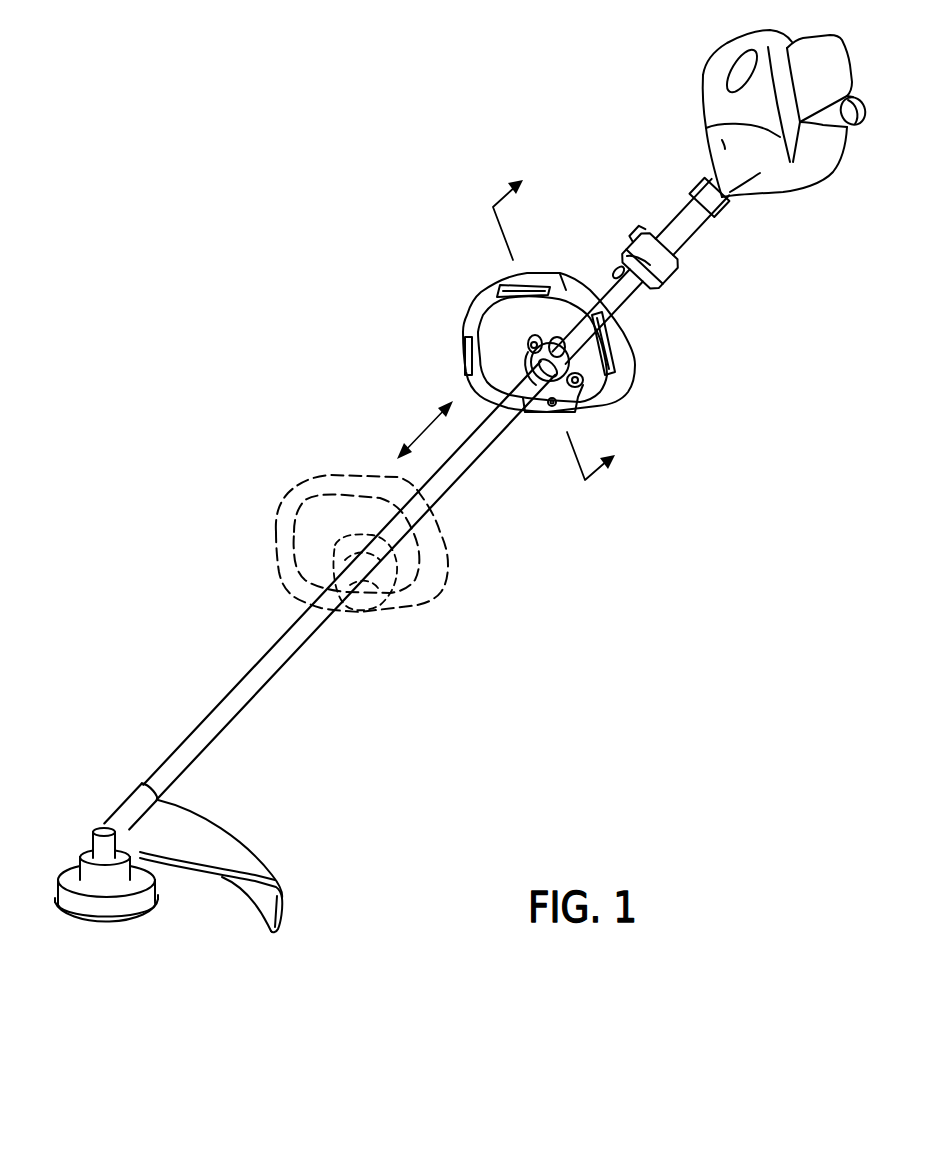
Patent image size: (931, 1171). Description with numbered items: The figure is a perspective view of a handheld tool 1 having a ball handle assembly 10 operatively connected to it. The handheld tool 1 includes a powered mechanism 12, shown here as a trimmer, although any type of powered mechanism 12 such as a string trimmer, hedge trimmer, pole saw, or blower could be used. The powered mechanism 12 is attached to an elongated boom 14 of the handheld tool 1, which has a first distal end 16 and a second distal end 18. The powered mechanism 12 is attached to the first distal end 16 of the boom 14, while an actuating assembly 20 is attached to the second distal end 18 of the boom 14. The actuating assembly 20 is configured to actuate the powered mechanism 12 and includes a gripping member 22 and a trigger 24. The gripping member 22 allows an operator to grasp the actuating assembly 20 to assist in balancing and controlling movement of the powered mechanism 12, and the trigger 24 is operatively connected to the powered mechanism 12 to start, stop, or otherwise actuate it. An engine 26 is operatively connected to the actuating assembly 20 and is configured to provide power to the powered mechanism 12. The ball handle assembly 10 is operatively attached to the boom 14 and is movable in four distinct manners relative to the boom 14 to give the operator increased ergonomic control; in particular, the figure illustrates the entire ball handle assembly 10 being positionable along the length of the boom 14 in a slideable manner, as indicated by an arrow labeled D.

The handheld tool 1 is at (542, 662).
The ball handle assembly 10 is at (440, 294).
The powered mechanism 12 is at (203, 912).
The elongated boom 14 is at (236, 704).
The first distal end 16 is at (146, 797).
The second distal end 18 is at (612, 298).
The actuating assembly 20 is at (631, 152).
The gripping member 22 is at (691, 218).
The trigger 24 is at (684, 258).
The engine 26 is at (815, 161).